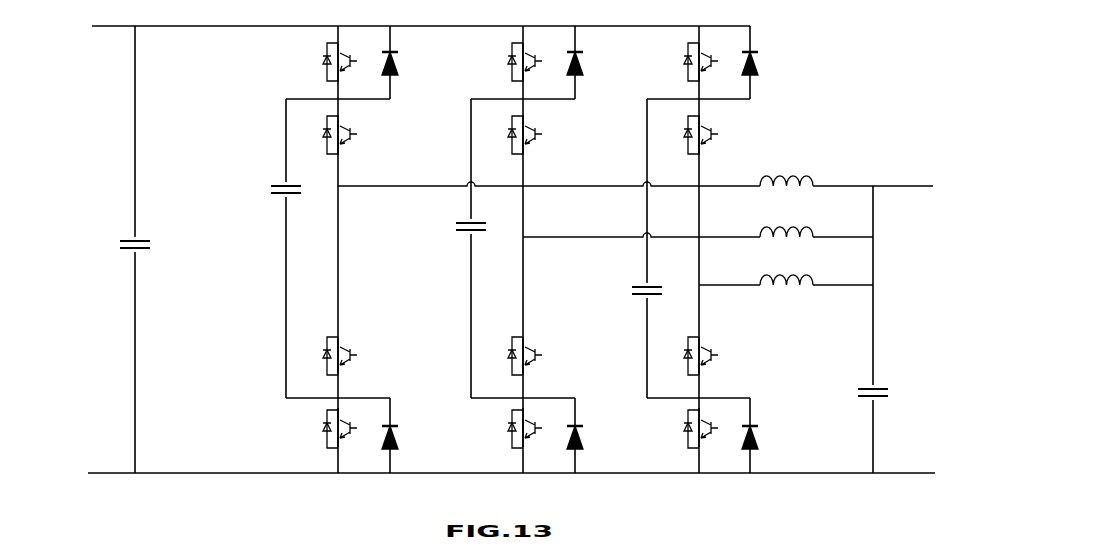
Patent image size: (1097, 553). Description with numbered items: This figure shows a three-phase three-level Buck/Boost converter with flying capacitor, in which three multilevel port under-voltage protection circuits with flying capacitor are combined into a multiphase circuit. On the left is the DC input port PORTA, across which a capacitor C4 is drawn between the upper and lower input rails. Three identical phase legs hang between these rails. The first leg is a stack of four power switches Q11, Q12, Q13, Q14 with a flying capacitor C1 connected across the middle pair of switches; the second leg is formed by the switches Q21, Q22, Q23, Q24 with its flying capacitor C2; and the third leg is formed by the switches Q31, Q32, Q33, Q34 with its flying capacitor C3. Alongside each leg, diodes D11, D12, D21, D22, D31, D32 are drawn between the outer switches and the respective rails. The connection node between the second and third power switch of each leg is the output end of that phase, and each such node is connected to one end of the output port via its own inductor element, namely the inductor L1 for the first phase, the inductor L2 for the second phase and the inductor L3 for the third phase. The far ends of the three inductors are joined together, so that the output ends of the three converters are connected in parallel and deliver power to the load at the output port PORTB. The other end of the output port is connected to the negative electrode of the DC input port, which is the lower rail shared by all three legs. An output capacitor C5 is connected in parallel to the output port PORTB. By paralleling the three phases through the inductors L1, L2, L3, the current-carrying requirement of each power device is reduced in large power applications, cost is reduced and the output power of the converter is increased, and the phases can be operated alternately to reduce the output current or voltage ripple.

The port A PORTA is at (88, 249).
The output port PORTB is at (911, 329).
The capacitor C1 is at (280, 248).
The capacitor C2 is at (465, 248).
The capacitor C3 is at (642, 248).
The capacitor C4 is at (123, 256).
The output capacitor C5 is at (883, 408).
The inductor element L1 is at (635, 195).
The inductor element L2 is at (698, 245).
The inductor element L3 is at (786, 293).
The switch Q11 is at (351, 67).
The switch Q12 is at (352, 140).
The switch Q13 is at (352, 363).
The switch Q14 is at (351, 435).
The switch Q21 is at (537, 67).
The switch Q22 is at (538, 140).
The switch Q23 is at (538, 363).
The switch Q24 is at (537, 435).
The switch Q31 is at (712, 67).
The switch Q32 is at (714, 140).
The switch Q33 is at (714, 363).
The switch Q34 is at (712, 435).
The diode D11 is at (411, 62).
The diode D12 is at (410, 435).
The diode D21 is at (596, 62).
The diode D22 is at (595, 435).
The diode D31 is at (771, 62).
The diode D32 is at (771, 435).